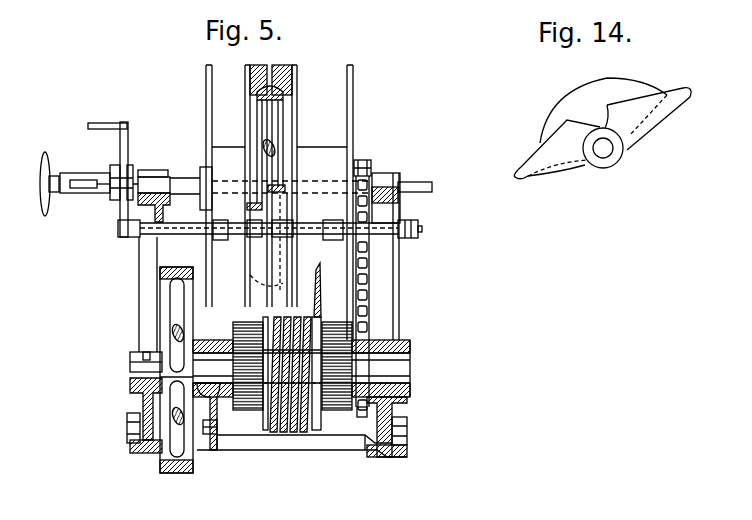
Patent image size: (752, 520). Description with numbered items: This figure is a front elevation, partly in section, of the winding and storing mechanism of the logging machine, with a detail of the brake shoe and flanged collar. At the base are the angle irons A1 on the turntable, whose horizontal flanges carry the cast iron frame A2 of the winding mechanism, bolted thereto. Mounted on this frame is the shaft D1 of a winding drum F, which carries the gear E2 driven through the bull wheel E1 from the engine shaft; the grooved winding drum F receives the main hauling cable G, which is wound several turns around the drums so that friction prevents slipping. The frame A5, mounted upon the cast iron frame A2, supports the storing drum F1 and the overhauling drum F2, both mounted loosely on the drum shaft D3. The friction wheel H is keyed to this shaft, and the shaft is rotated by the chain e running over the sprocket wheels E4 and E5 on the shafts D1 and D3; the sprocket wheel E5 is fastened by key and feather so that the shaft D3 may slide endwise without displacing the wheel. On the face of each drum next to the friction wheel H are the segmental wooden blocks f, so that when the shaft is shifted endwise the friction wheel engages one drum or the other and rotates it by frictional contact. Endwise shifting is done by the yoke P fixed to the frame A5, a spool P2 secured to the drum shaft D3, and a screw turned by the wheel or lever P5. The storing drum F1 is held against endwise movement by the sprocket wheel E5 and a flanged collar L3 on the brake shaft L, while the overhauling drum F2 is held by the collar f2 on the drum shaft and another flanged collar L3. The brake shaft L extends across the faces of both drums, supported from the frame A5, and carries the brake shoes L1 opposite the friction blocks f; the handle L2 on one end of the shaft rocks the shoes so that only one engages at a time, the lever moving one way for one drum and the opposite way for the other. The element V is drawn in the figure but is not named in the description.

In FIG. 5, the angle irons A1 is at (128, 448).
In FIG. 5, the cast iron frame A2 is at (140, 400).
In FIG. 5, the frame A5 is at (139, 293).
In FIG. 5, the winding drum shaft D1 is at (410, 368).
In FIG. 5, the drum shaft D3 is at (432, 188).
In FIG. 5, the bull wheel E1 is at (180, 267).
In FIG. 5, the gear E2 is at (236, 327).
In FIG. 5, the sprocket wheel E4 is at (362, 412).
In FIG. 5, the sprocket wheel E5 is at (368, 172).
In FIG. 5, the winding drum F is at (295, 327).
In FIG. 5, the storing drum F1 is at (311, 152).
In FIG. 5, the overhauling drum F2 is at (225, 186).
In FIG. 5, the main or hauling cable G is at (316, 272).
In FIG. 5, the friction wheel H is at (280, 103).
In FIG. 5, the brake shaft L is at (422, 229).
In FIG. 14, the brake shaft L is at (608, 150).
In FIG. 5, the brake shoe L1 is at (250, 243).
In FIG. 14, the brake shoe L1 is at (527, 158).
In FIG. 5, the handle L2 is at (128, 132).
In FIG. 5, the flanged collar L3 is at (212, 210).
In FIG. 14, the flanged collar L3 is at (573, 98).
In FIG. 5, the yoke P is at (88, 180).
In FIG. 5, the spool P2 is at (113, 170).
In FIG. 5, the wheel or lever P5 is at (43, 170).
In FIG. 5, the housing floor V is at (345, 435).
In FIG. 5, the chain e is at (370, 295).
In FIG. 5, the segmental wooden blocks f is at (258, 70).
In FIG. 5, the collar f2 is at (178, 178).